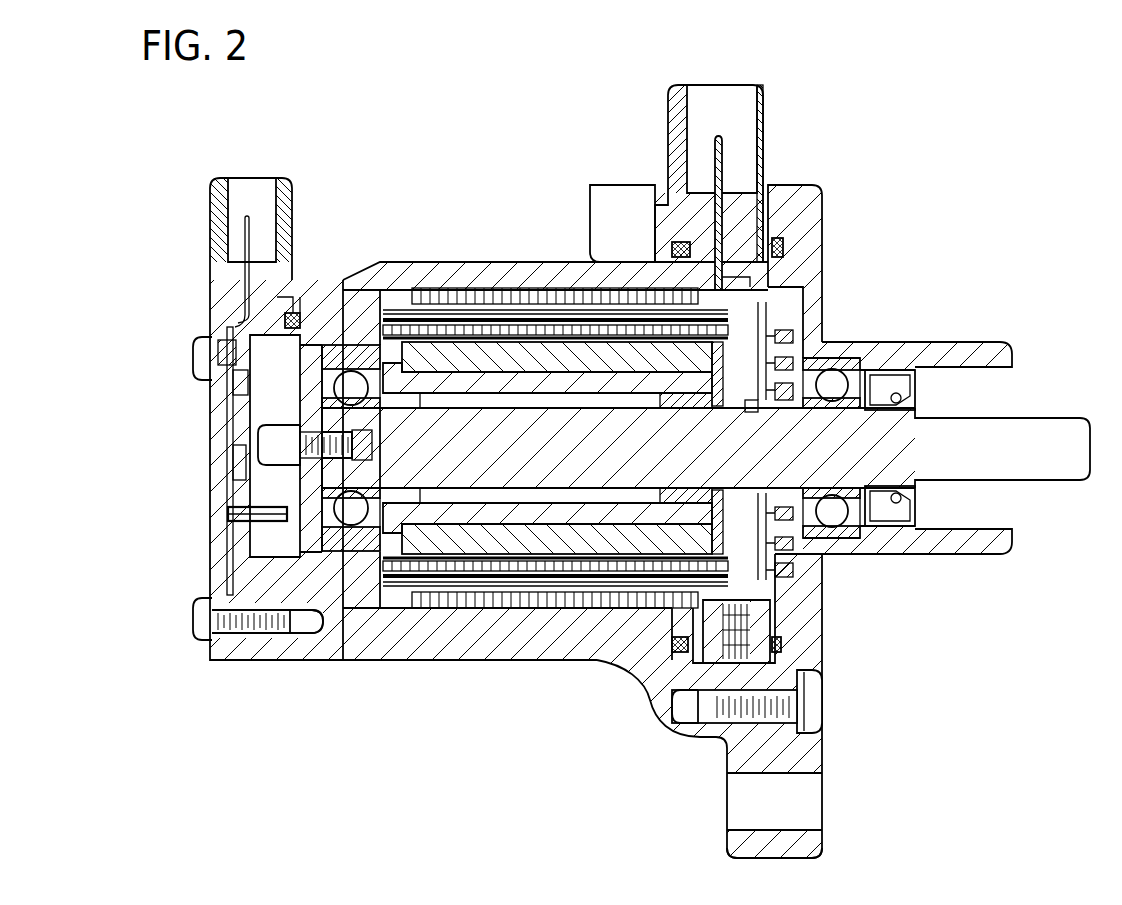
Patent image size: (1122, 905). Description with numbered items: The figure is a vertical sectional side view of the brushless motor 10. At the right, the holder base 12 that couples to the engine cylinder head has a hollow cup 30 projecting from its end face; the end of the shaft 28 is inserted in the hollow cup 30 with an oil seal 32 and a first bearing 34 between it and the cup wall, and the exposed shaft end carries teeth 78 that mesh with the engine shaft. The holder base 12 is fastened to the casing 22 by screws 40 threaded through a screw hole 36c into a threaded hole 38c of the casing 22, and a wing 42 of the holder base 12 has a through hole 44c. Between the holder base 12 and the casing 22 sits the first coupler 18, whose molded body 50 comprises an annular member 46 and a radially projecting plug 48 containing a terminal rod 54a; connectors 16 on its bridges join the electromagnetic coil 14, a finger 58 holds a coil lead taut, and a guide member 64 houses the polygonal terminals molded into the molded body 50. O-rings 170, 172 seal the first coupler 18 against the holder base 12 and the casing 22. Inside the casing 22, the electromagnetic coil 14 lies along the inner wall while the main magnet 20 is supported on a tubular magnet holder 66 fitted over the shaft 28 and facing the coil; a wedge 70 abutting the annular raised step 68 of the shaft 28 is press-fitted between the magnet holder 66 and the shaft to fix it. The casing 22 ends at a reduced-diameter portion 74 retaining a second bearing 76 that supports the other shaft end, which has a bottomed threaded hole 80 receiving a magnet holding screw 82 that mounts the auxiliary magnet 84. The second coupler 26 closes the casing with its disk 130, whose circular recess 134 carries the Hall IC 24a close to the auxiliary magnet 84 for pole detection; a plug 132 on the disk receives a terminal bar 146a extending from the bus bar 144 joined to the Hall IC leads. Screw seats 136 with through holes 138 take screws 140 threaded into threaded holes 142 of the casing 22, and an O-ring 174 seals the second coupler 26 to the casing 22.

The brushless motor 10 is at (190, 112).
The holder base 12 is at (815, 340).
The electromagnetic coil 14 is at (532, 300).
The connectors 16 is at (792, 330).
The first coupler 18 is at (760, 236).
The main magnet 20 is at (507, 542).
The casing 22 is at (548, 636).
The Hall IC 24a is at (230, 522).
The second coupler 26 is at (219, 436).
The shaft 28 is at (613, 452).
The hollow cup 30 is at (935, 344).
The oil seal 32 is at (900, 508).
The first bearing 34 is at (836, 516).
The screw hole 36c is at (823, 705).
The threaded hole 38c is at (702, 714).
The screws 40 is at (822, 685).
The wings 42 is at (740, 850).
The through hole 44c is at (795, 830).
The annular member 46 is at (760, 630).
The plug 48 is at (740, 93).
The molded body 50 is at (750, 156).
The terminal rod 54a is at (724, 148).
The finger 58 is at (757, 530).
The guide member 64 is at (665, 662).
The magnet holder 66 is at (437, 512).
The annular raised step 68 is at (750, 404).
The wedge 70 is at (691, 490).
The reduced-diameter portion 74 is at (384, 640).
The second bearing 76 is at (352, 520).
The teeth 78 is at (1048, 420).
The bottomed threaded hole 80 is at (394, 430).
The magnet holding screw 82 is at (343, 372).
The auxiliary magnet 84 is at (262, 435).
The disk 130 is at (224, 490).
The plug 132 is at (248, 178).
The circular recess 134 is at (232, 382).
The screw seats 136 is at (214, 628).
The through holes 138 is at (231, 640).
The screws 140 is at (196, 340).
The threaded holes 142 is at (314, 636).
The bus bar 144 is at (232, 462).
The terminal bar 146a is at (245, 226).
The O-ring 170 is at (784, 247).
The O-ring 172 is at (680, 243).
The O-ring 174 is at (294, 314).